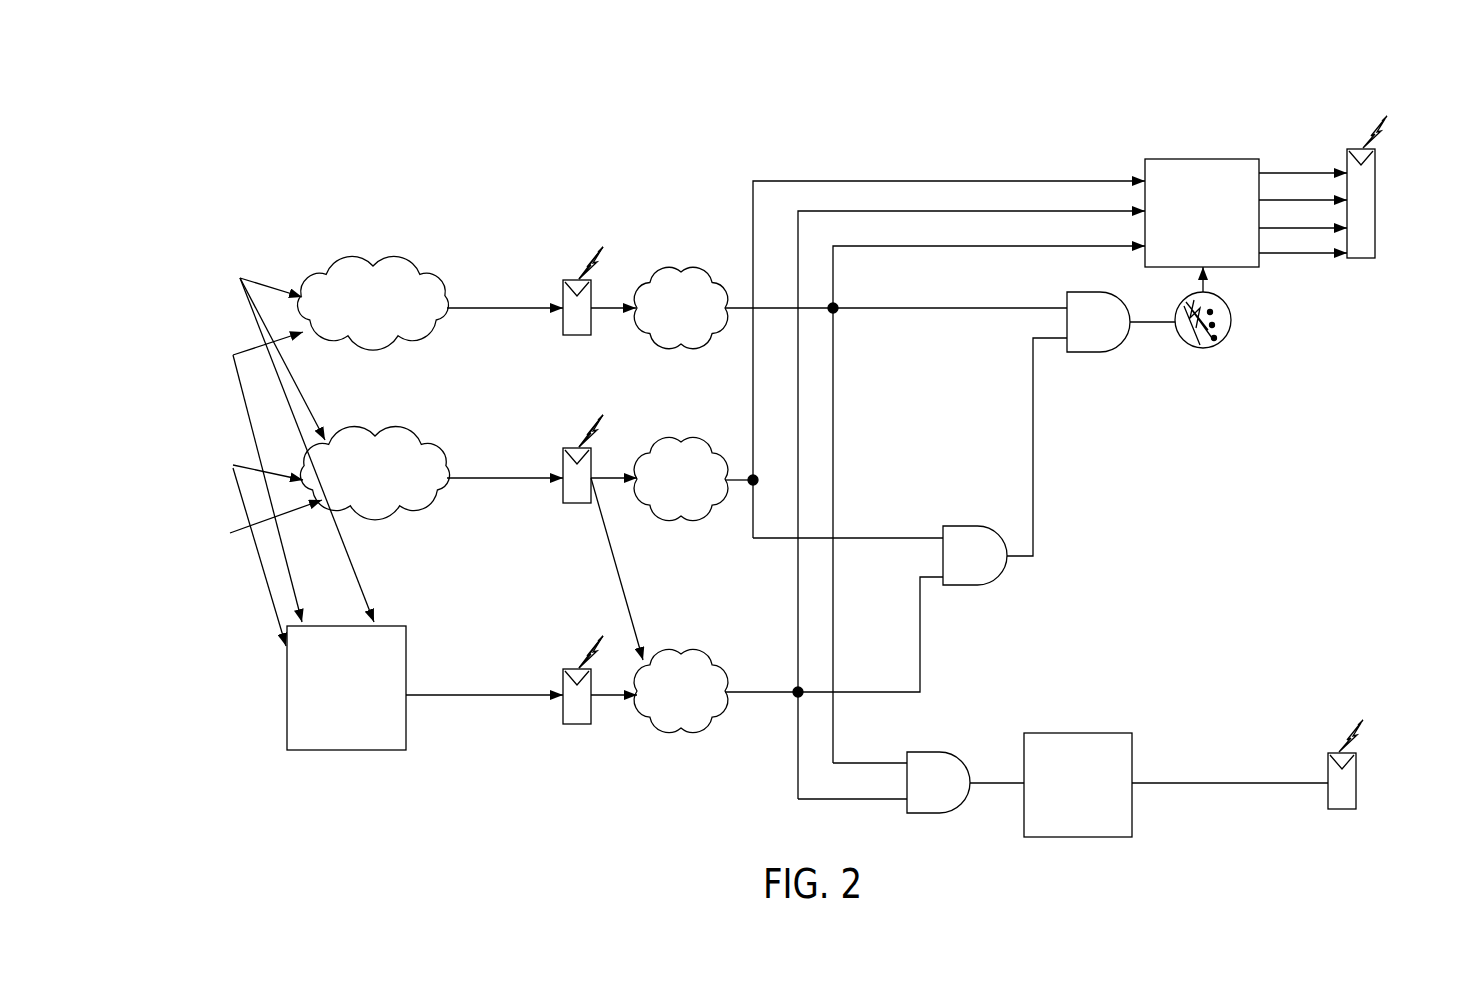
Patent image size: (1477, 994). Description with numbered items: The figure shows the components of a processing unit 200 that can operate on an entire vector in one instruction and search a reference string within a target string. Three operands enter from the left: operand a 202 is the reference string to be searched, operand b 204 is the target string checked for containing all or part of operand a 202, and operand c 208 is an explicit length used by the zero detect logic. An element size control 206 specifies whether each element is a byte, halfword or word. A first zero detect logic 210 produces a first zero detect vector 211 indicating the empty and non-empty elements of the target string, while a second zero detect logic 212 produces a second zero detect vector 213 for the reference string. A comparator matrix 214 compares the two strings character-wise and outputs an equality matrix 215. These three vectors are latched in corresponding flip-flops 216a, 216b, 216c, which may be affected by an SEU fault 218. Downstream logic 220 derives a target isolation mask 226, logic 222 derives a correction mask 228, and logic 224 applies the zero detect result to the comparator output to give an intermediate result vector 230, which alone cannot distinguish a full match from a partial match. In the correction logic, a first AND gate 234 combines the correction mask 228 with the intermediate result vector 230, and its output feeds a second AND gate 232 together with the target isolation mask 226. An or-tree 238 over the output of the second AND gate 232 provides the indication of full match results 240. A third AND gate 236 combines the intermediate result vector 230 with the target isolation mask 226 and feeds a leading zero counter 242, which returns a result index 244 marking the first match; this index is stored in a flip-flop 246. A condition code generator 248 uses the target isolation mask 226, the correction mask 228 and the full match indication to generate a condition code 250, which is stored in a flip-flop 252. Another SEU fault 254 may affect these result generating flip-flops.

The processing unit 200 is at (503, 127).
The operand a 202 is at (160, 450).
The operand b 204 is at (172, 337).
The element size control 206 is at (178, 258).
The operand c 208 is at (153, 525).
The first zero detect logic 210 is at (360, 266).
The first zero detect vector 211 is at (494, 282).
The second zero detect logic 212 is at (360, 436).
The second zero detect vector 213 is at (496, 455).
The comparator matrix 214 is at (287, 683).
The equality matrix 215 is at (496, 668).
The flip-flop 216a is at (563, 325).
The flip-flop 216b is at (568, 500).
The flip-flop 216c is at (568, 720).
The SEU fault 218 is at (597, 252).
The logic 220 is at (666, 272).
The logic 222 is at (668, 442).
The logic 224 is at (668, 654).
The target isolation mask 226 is at (930, 289).
The correction mask 228 is at (895, 457).
The intermediate result vector 230 is at (874, 656).
The second AND gate 232 is at (1098, 353).
The first AND gate 234 is at (1000, 582).
The third AND gate 236 is at (930, 752).
The or-tree 238 is at (1225, 340).
The full match results 240 is at (1320, 306).
The leading zero counter 242 is at (1100, 733).
The result index 244 is at (1235, 753).
The flip-flop 246 is at (1326, 802).
The condition code generator 248 is at (1202, 159).
The condition code 250 is at (1304, 135).
The flip-flop 252 is at (1375, 238).
The SEU fault 254 is at (1378, 118).